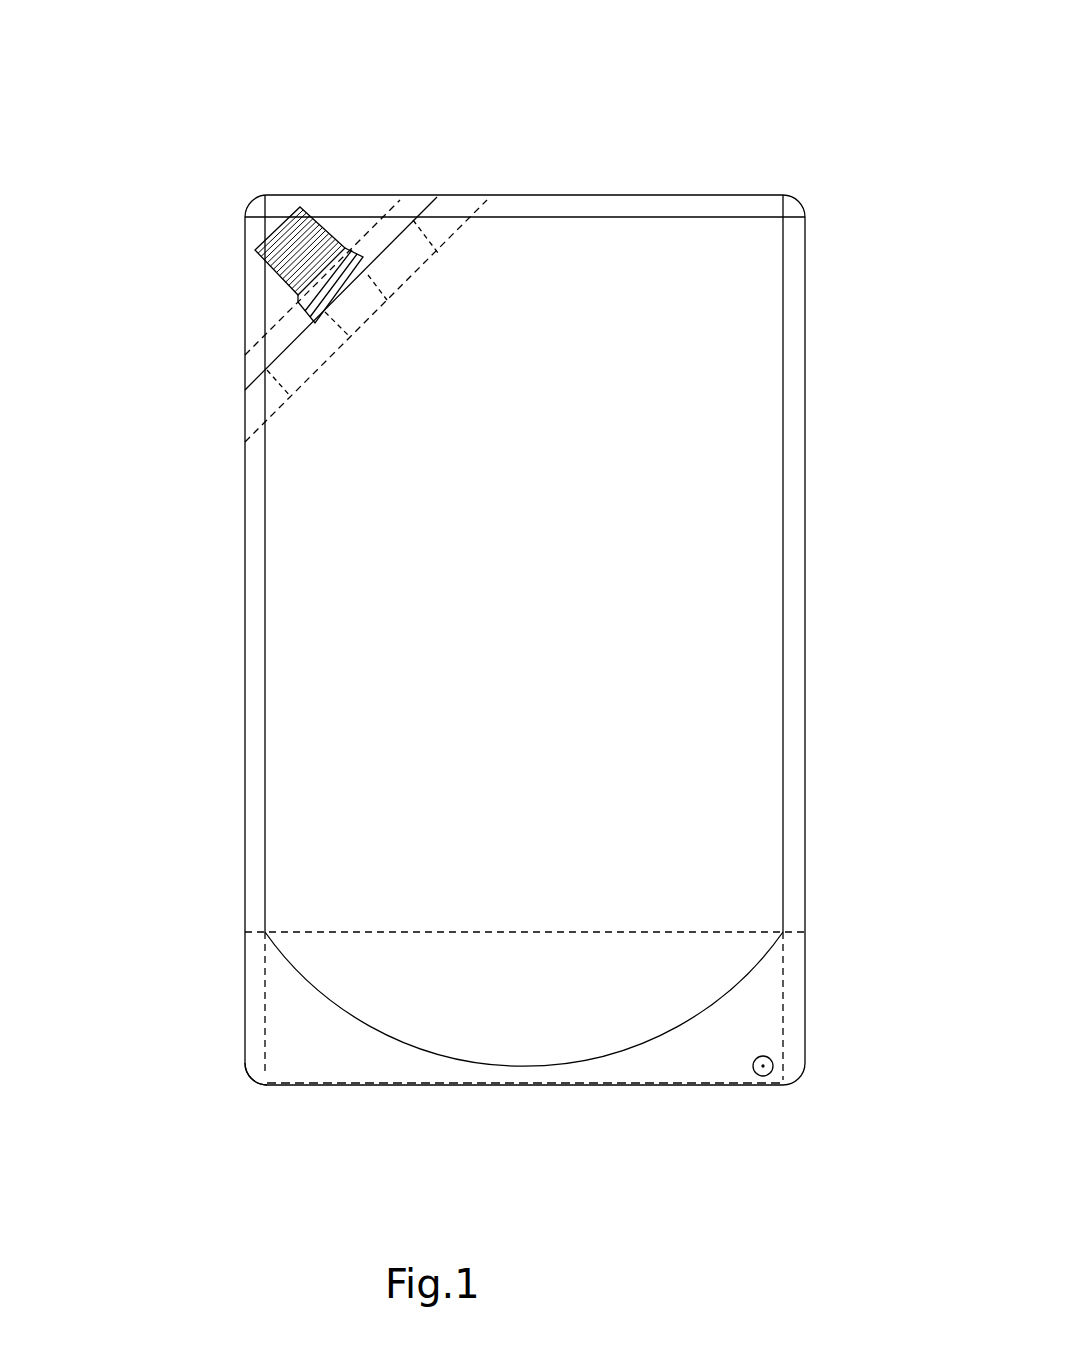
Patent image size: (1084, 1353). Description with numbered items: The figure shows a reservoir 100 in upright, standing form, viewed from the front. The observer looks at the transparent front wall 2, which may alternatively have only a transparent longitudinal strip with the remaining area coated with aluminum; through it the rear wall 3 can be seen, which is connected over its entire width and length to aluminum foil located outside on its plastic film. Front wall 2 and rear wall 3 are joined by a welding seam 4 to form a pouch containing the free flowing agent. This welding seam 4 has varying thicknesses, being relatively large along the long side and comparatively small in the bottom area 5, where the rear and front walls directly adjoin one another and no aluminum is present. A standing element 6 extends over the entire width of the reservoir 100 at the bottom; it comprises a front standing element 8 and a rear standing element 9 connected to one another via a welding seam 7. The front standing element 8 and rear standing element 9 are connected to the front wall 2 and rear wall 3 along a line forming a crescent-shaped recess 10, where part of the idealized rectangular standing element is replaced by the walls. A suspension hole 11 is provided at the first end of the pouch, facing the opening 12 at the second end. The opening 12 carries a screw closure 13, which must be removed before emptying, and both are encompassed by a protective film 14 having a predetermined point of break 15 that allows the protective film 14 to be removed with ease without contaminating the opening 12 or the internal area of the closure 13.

The reservoir 100 is at (707, 70).
The front wall 2 is at (275, 673).
The rear wall 3 is at (762, 334).
The welding seam 4 is at (797, 661).
The bottom area 5 is at (763, 975).
The standing element 6 is at (262, 1067).
The welding seam 7 is at (255, 997).
The front standing element 8 is at (353, 1060).
The rear standing element 9 is at (498, 1066).
The crescent-shaped recess 10 is at (688, 1052).
The suspension hole 11 is at (773, 1067).
The opening 12 is at (311, 215).
The closure 13 is at (277, 220).
The protective film 14 is at (255, 363).
The predetermined point of break 15 is at (265, 335).